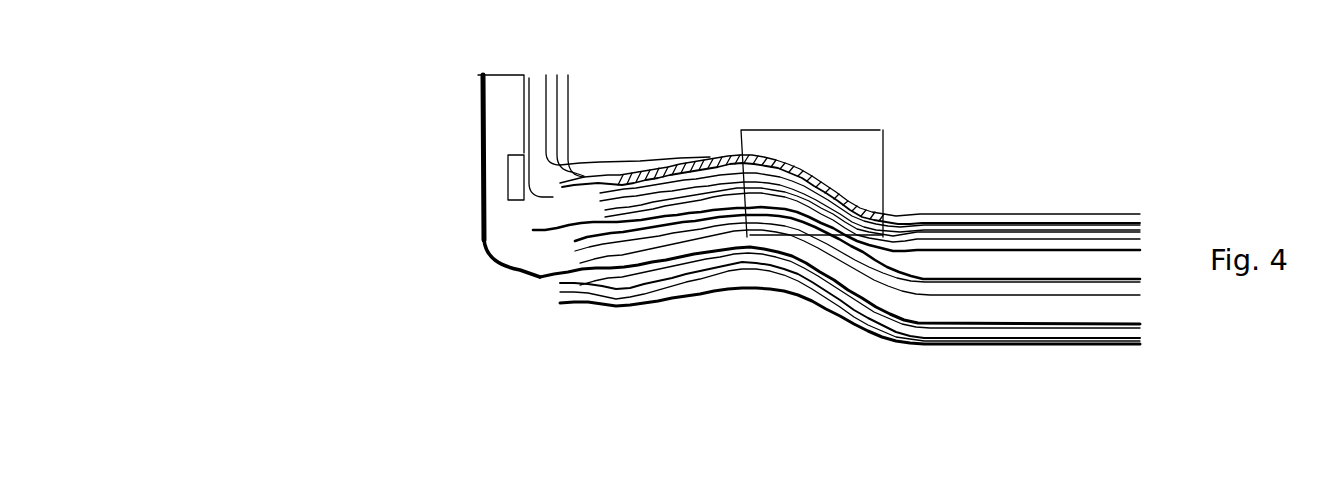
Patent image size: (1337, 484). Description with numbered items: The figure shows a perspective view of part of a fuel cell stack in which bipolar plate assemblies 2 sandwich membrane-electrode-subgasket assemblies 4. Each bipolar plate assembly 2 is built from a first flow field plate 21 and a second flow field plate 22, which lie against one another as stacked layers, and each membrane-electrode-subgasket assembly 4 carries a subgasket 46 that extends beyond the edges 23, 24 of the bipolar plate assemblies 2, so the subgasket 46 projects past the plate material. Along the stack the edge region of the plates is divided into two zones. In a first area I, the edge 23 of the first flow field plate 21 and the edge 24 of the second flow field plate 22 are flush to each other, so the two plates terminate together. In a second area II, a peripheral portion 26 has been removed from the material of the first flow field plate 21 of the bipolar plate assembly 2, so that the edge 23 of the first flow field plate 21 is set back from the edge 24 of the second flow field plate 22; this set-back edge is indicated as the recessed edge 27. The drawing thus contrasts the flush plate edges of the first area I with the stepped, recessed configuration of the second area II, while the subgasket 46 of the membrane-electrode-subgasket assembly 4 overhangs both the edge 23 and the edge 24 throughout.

The bipolar plate assembly 2 is at (547, 108).
The first flow field plate 21 is at (545, 150).
The edge of the first flow field plate 23 is at (577, 172).
The membrane-electrode-subgasket assembly 4 is at (497, 143).
The first area I is at (518, 186).
The edge of the second flow field plate 24 is at (577, 202).
The second flow field plate 22 is at (568, 205).
The subgasket 46 is at (621, 215).
The peripheral portion 26 is at (760, 158).
The recessed edge 27 is at (797, 162).
The second area II is at (882, 147).